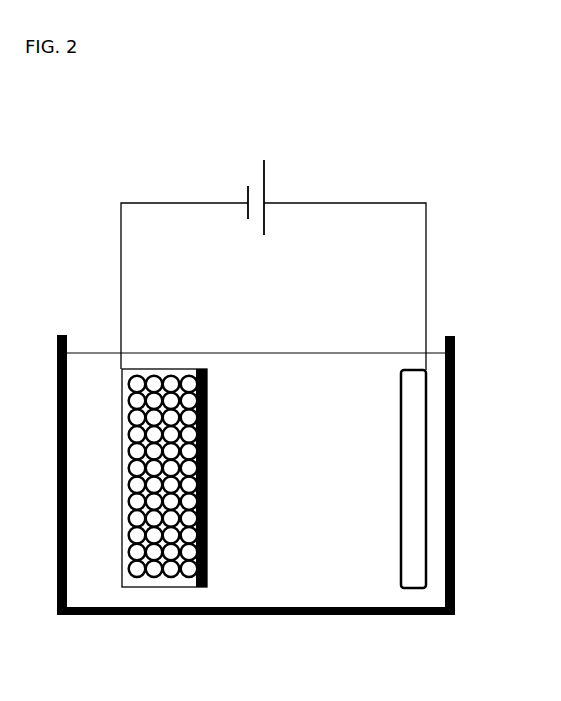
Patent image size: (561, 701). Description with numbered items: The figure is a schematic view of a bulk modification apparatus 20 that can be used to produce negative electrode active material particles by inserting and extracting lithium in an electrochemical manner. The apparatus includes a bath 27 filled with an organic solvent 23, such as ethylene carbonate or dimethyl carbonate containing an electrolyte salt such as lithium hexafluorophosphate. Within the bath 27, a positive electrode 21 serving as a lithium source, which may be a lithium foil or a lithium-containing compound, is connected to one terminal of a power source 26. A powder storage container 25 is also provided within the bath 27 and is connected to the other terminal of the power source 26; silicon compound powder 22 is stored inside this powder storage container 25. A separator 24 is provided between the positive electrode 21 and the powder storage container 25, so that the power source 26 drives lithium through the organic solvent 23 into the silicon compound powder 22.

The bulk modification apparatus 20 is at (84, 145).
The positive electrode 21 is at (410, 427).
The silicon compound powder 22 is at (182, 464).
The organic solvent 23 is at (300, 378).
The separator 24 is at (216, 396).
The powder storage container 25 is at (155, 370).
The power source 26 is at (283, 141).
The bath 27 is at (378, 624).